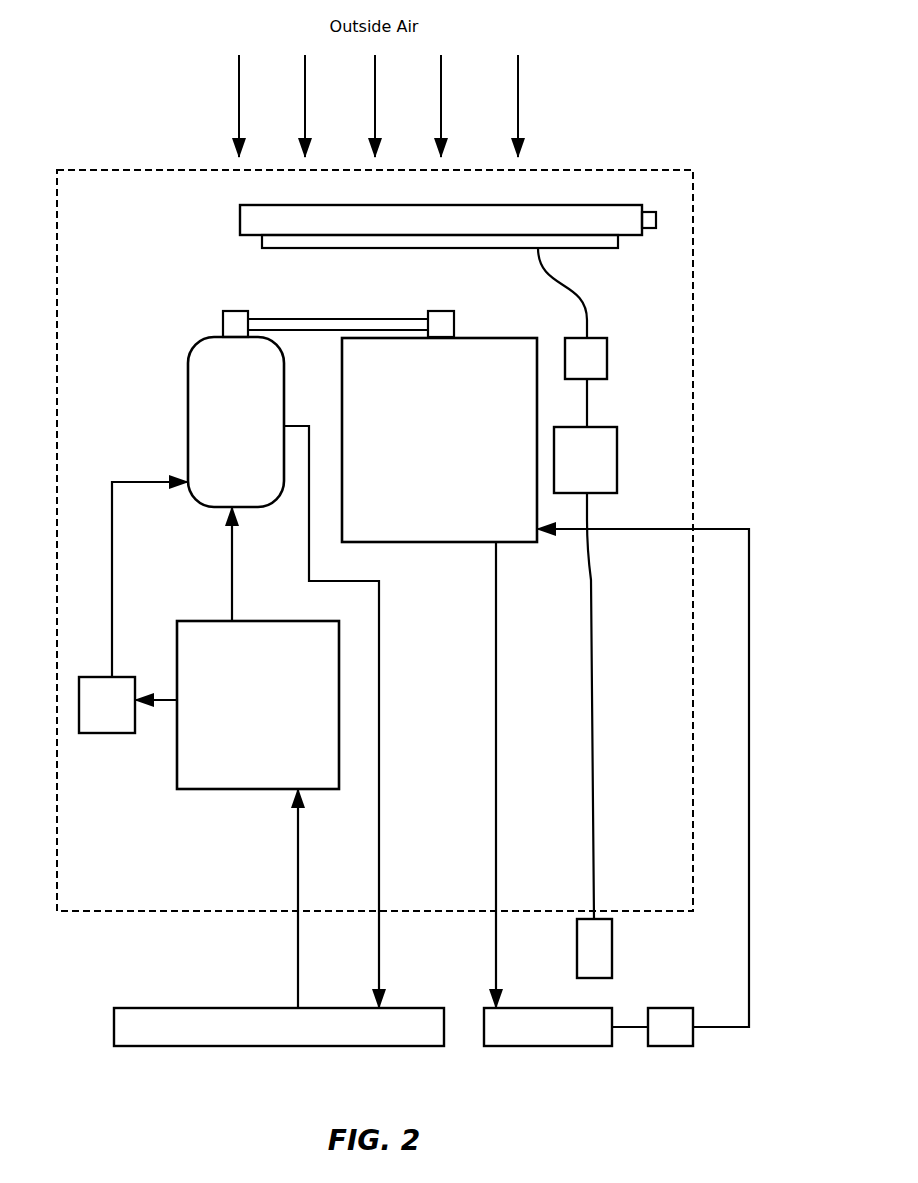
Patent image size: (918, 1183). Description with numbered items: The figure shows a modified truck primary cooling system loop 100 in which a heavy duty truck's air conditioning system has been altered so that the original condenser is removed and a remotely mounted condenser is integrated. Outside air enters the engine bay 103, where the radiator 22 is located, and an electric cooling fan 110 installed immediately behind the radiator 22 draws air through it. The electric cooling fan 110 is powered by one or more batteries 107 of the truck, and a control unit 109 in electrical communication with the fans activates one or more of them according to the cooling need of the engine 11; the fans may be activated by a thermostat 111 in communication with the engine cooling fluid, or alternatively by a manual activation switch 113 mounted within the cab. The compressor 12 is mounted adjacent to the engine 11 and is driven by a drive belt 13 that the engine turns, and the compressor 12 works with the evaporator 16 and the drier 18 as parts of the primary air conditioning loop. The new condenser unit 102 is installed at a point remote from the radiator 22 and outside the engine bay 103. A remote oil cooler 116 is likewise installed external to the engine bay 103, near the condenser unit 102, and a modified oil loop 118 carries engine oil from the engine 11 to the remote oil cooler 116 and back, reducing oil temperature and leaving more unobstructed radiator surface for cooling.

The modified truck primary cooling system loop 100 is at (130, 148).
The engine bay 103 is at (660, 170).
The radiator 22 is at (240, 218).
The thermostat 111 is at (656, 220).
The electric cooling fan 110 is at (618, 242).
The drive belt 13 is at (223, 322).
The compressor 12 is at (188, 450).
The engine 11 is at (439, 440).
The control unit 109 is at (607, 358).
The battery 107 is at (585, 460).
The drier 18 is at (117, 733).
The evaporator 16 is at (245, 789).
The condenser unit 102 is at (279, 1027).
The manual activation switch 113 is at (612, 948).
The remote oil cooler 116 is at (548, 1027).
The modified oil loop 118 is at (680, 1046).